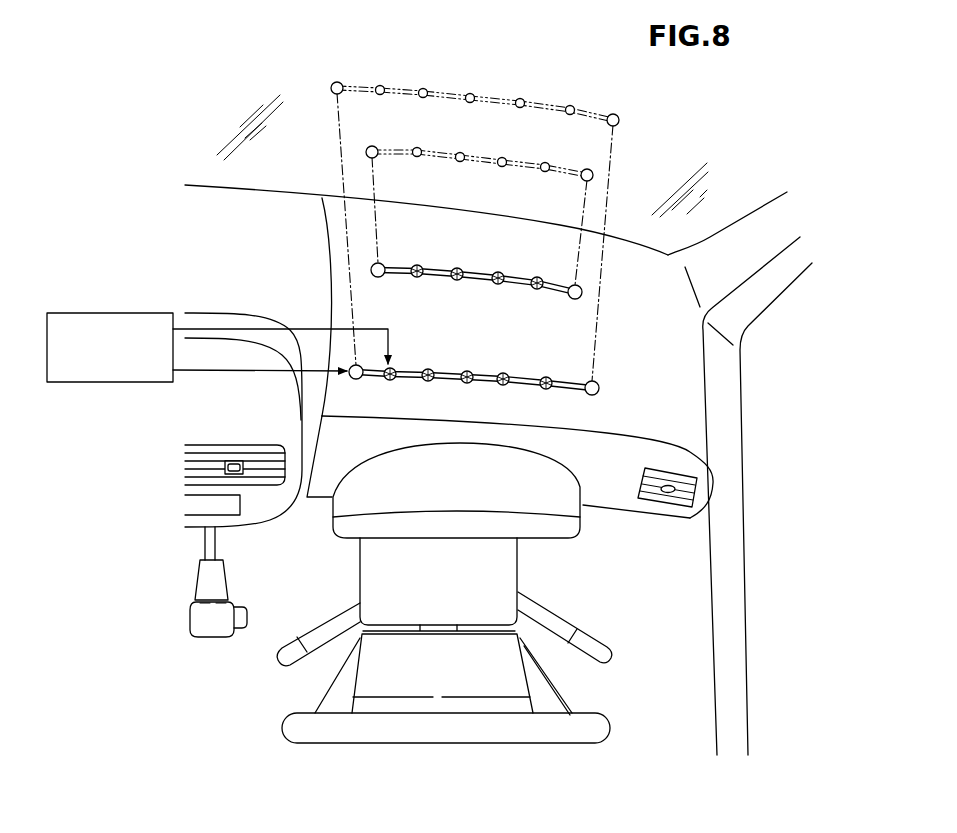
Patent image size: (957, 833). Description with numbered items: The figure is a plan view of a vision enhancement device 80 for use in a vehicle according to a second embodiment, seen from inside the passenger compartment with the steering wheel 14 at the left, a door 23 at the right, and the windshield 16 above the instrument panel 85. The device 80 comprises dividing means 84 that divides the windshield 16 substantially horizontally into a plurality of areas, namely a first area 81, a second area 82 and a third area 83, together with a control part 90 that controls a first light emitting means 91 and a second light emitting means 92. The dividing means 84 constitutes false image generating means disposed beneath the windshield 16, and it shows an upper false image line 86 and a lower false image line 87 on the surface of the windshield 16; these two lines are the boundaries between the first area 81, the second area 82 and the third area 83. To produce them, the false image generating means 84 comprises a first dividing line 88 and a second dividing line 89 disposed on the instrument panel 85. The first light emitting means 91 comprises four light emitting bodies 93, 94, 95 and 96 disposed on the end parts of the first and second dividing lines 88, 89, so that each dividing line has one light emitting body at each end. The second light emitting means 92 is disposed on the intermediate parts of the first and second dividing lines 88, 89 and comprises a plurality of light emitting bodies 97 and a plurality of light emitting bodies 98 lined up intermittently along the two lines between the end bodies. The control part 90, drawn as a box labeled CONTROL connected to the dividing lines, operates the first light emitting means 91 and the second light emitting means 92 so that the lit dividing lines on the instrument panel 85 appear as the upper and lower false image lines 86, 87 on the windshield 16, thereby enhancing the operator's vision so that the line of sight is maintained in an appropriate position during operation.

The steering wheel 14 is at (610, 727).
The windshield 16 is at (700, 170).
The door 23 is at (738, 437).
The vision enhancement device 80 is at (211, 56).
The first area 81 is at (500, 86).
The second area 82 is at (529, 148).
The third area 83 is at (550, 207).
The dividing means 84 is at (562, 276).
The instrument panel 85 is at (209, 183).
The upper false image line 86 is at (410, 88).
The lower false image line 87 is at (433, 152).
The first dividing line 88 is at (505, 374).
The second dividing line 89 is at (466, 222).
The control part 90 is at (109, 311).
The first light emitting means 91 is at (361, 306).
The second light emitting means 92 is at (413, 392).
The light emitting body 93 is at (358, 380).
The light emitting body 94 is at (598, 383).
The light emitting body 95 is at (375, 265).
The light emitting body 96 is at (579, 286).
The light emitting bodies 97 is at (547, 378).
The light emitting bodies 98 is at (538, 282).